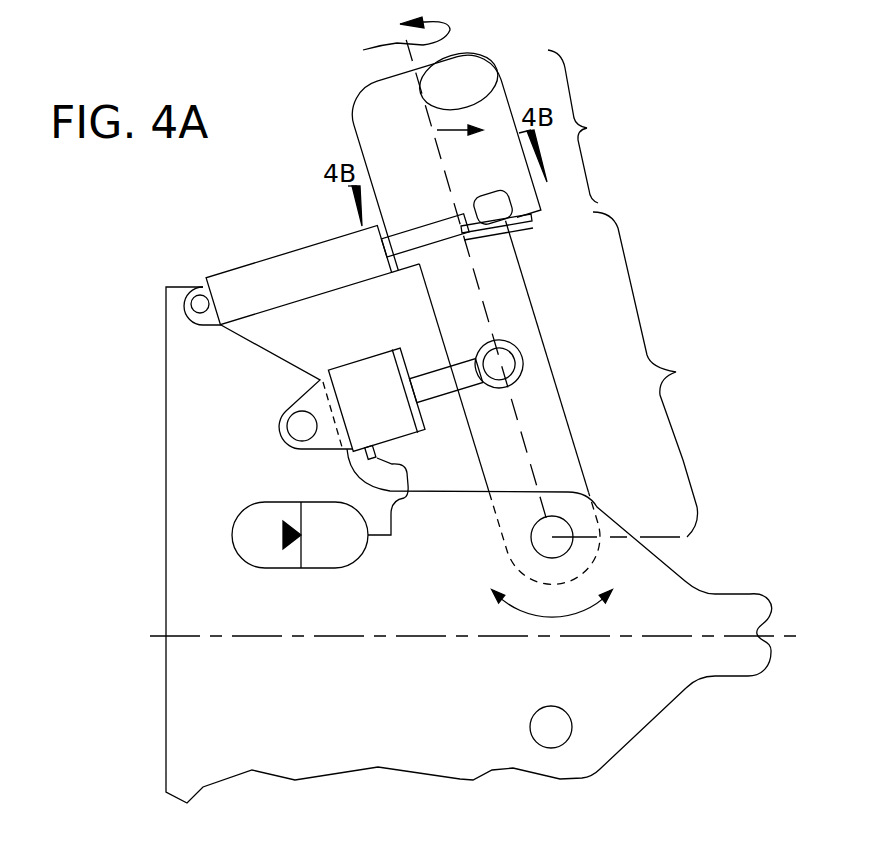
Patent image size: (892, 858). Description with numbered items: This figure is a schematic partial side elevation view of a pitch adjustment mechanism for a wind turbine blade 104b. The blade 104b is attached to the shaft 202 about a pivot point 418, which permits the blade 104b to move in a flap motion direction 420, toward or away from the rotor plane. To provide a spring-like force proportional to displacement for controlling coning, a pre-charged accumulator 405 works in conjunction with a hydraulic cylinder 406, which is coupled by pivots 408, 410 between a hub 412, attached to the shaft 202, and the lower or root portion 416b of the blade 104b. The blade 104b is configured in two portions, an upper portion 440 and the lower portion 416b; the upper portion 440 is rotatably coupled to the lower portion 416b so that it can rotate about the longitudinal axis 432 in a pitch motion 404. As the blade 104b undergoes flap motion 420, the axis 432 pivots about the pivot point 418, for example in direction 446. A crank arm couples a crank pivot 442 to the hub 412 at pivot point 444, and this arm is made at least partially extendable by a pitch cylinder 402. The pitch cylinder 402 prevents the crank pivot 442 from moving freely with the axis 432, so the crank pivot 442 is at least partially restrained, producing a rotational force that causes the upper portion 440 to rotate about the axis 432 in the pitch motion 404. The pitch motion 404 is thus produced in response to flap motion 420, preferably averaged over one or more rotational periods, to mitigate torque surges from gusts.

The blade 104b is at (514, 258).
The shaft 202 is at (727, 606).
The pitch cylinder 402 is at (272, 228).
The pitch motion 404 is at (363, 50).
The pre-charged accumulator 405 is at (352, 566).
The hydraulic cylinder 406 is at (373, 357).
The pivot 408 is at (292, 422).
The pivot 410 is at (517, 356).
The hub 412 is at (178, 357).
The lower portion 416b is at (670, 374).
The pivot point 418 is at (552, 537).
The flap motion direction 420 is at (547, 617).
The longitudinal axis 432 is at (462, 47).
The upper portion 440 is at (598, 126).
The crank pivot 442 is at (480, 207).
The pivot point 444 is at (196, 287).
The direction 446 is at (437, 130).